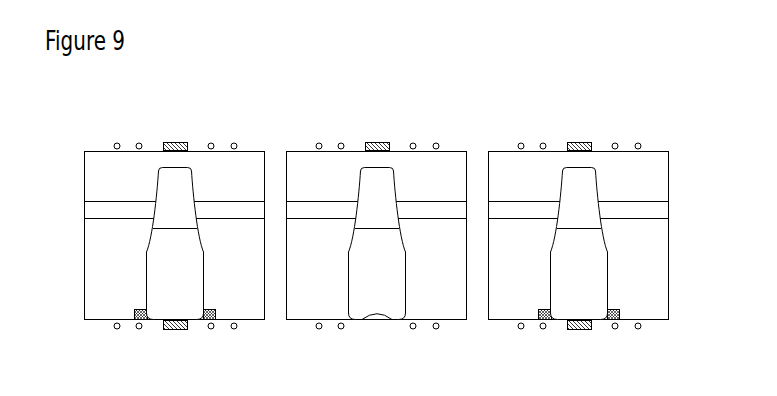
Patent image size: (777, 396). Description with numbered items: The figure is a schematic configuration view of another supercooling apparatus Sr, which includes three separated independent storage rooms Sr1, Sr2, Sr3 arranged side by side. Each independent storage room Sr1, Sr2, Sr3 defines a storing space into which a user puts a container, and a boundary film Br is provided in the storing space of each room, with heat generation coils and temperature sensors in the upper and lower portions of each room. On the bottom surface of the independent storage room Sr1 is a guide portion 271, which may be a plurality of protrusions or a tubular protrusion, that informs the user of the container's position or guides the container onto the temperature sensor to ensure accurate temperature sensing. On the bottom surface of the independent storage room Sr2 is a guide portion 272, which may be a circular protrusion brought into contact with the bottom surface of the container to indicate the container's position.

The supercooling apparatus Sr is at (686, 167).
The independent storage room Sr1 is at (82, 276).
The independent storage room Sr2 is at (279, 190).
The independent storage room Sr3 is at (675, 250).
The boundary film Br is at (95, 210).
The guide portion 271 is at (147, 322).
The guide portion 272 is at (387, 318).